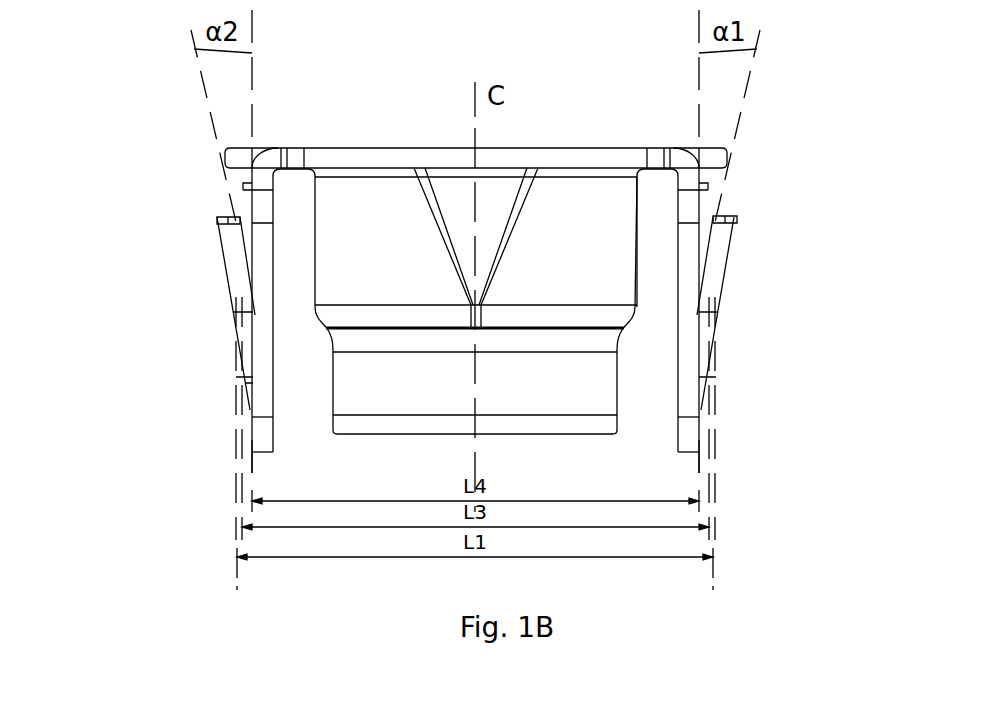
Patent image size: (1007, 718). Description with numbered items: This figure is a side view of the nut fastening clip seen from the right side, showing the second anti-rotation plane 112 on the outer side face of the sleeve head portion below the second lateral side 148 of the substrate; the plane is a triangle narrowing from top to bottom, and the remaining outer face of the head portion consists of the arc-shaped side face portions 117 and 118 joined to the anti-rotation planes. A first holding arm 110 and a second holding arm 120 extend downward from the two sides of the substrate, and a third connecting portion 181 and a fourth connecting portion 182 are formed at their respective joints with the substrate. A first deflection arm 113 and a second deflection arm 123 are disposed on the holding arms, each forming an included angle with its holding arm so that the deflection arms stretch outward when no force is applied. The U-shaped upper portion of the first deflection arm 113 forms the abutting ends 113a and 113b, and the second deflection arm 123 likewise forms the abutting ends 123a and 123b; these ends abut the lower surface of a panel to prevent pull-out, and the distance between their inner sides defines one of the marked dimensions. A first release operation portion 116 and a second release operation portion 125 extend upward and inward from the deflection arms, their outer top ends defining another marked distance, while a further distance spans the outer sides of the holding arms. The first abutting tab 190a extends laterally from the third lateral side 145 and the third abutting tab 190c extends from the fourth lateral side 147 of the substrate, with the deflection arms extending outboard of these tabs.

The first holding arm 110 is at (695, 406).
The second anti-rotation plane 112 is at (492, 220).
The first deflection arm 113 is at (712, 336).
The abutting end 113a is at (738, 216).
The abutting end 113b is at (738, 216).
The first release operation portion 116 is at (710, 192).
The arc-shaped side face portion 117 is at (600, 280).
The arc-shaped side face portion 118 is at (345, 280).
The second holding arm 120 is at (255, 378).
The second deflection arm 123 is at (237, 332).
The abutting end 123a is at (222, 220).
The abutting end 123b is at (222, 220).
The second release operation portion 125 is at (243, 190).
The third lateral side 145 is at (653, 147).
The fourth lateral side 147 is at (296, 155).
The second lateral side 148 is at (565, 158).
The third connecting portion 181 is at (730, 160).
The fourth connecting portion 182 is at (262, 166).
The first abutting tab 190a is at (718, 163).
The third abutting tab 190c is at (233, 158).